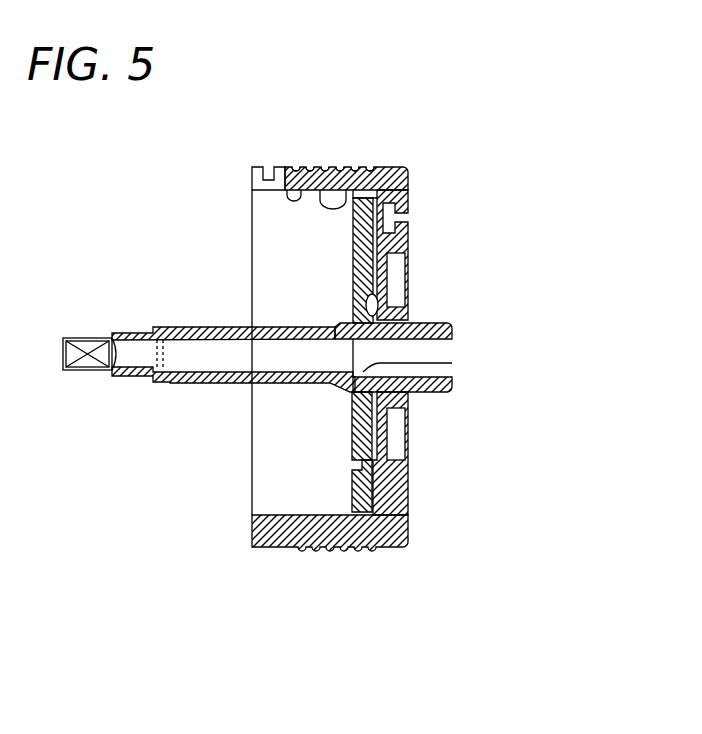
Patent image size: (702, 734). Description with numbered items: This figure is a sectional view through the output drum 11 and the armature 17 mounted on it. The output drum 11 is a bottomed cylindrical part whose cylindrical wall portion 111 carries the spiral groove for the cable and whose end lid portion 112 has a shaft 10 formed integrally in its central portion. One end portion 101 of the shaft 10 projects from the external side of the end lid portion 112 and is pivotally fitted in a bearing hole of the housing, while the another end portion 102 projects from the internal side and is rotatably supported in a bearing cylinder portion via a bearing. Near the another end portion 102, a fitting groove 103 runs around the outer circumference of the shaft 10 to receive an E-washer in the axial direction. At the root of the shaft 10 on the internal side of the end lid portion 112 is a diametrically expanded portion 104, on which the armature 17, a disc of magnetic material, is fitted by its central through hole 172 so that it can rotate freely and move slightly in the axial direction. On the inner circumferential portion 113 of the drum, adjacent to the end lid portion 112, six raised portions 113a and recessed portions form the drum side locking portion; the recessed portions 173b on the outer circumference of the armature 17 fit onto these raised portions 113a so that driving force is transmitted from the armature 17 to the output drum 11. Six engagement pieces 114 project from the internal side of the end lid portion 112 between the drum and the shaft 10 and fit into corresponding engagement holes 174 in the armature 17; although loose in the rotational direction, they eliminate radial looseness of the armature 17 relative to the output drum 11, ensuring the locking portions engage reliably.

The output drum 11 is at (434, 156).
The top plate of housing 111 is at (348, 167).
The end lid portion 112 is at (408, 489).
The inner circumferential portion 113 is at (294, 197).
The raised portions 113a is at (326, 195).
The recessed portions 173b is at (353, 197).
The diametrically expanded portion 104 is at (340, 322).
The one end portion 101 is at (423, 323).
The through hole 172 is at (452, 363).
The shaft 10 is at (213, 383).
The another end portion 102 is at (92, 337).
The fitting groove 103 is at (168, 384).
The engagement pieces 114 is at (352, 440).
The engagement holes 174 is at (352, 466).
The armature 17 is at (408, 516).